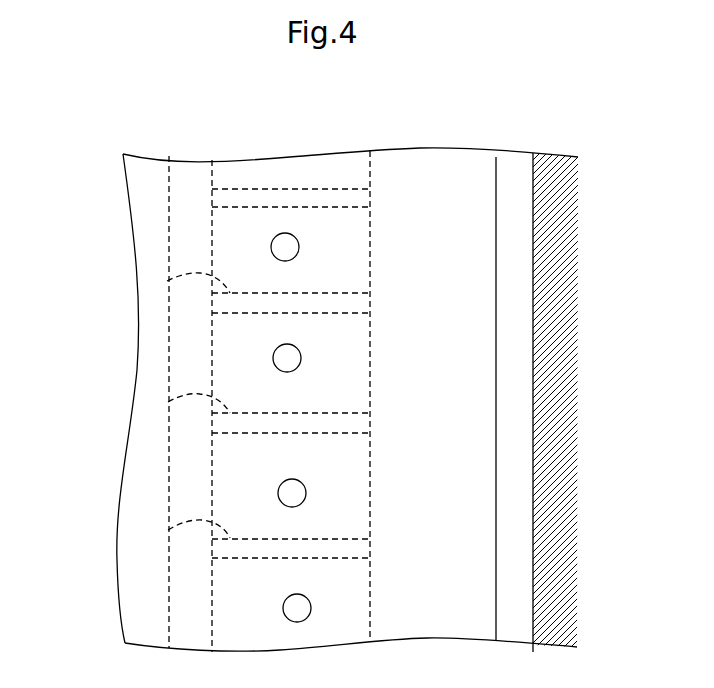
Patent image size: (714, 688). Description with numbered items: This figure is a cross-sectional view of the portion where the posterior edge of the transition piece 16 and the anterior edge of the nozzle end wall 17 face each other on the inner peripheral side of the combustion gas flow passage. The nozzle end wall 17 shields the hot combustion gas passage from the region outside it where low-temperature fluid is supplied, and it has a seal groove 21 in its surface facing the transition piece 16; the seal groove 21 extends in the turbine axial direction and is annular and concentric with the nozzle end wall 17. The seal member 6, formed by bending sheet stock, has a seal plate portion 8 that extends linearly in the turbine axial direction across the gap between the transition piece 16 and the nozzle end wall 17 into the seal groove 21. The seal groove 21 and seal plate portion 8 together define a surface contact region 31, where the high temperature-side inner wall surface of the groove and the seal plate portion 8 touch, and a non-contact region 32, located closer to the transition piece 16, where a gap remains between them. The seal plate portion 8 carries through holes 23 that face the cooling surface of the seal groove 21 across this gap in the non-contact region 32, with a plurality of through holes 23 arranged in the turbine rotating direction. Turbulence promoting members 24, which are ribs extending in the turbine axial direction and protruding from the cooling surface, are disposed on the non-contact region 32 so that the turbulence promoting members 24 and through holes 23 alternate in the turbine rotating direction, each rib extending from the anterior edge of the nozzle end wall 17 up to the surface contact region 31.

The transition piece 16 is at (173, 180).
The nozzle end wall 17 is at (213, 217).
The through hole 23 is at (283, 259).
The turbulence promoting member 24 is at (167, 281).
The non-contact region 32 is at (213, 125).
The surface contact region 31 is at (492, 125).
The seal member 6 is at (499, 270).
The seal plate portion 8 is at (495, 317).
The seal groove 21 is at (520, 388).